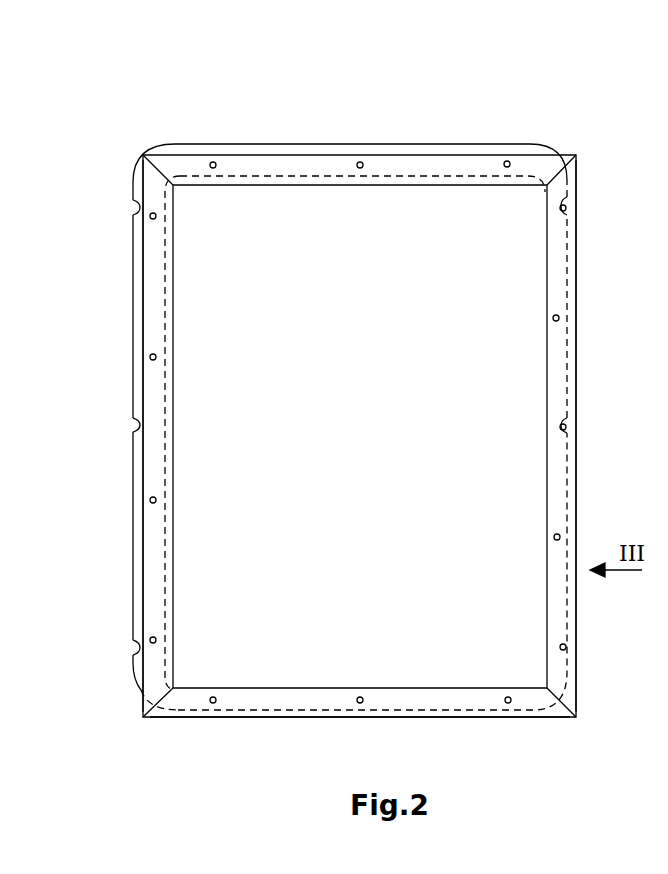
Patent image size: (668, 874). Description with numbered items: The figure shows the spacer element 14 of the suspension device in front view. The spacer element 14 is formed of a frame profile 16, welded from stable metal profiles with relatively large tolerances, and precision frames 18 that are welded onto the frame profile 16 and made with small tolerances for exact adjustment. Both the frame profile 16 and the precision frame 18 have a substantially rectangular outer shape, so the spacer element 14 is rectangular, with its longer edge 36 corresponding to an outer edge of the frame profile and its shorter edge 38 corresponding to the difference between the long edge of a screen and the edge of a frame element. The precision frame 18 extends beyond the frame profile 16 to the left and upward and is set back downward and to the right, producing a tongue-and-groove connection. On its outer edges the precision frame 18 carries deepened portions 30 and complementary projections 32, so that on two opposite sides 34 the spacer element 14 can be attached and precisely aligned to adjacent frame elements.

The spacer element 14 is at (369, 118).
The frame profile 16 is at (470, 718).
The precision frame 18 is at (452, 144).
The deepened portion 30 is at (133, 428).
The projection 32 is at (567, 429).
The opposite side 34 is at (132, 327).
The longer edge 36 is at (133, 550).
The shorter edge 38 is at (267, 144).